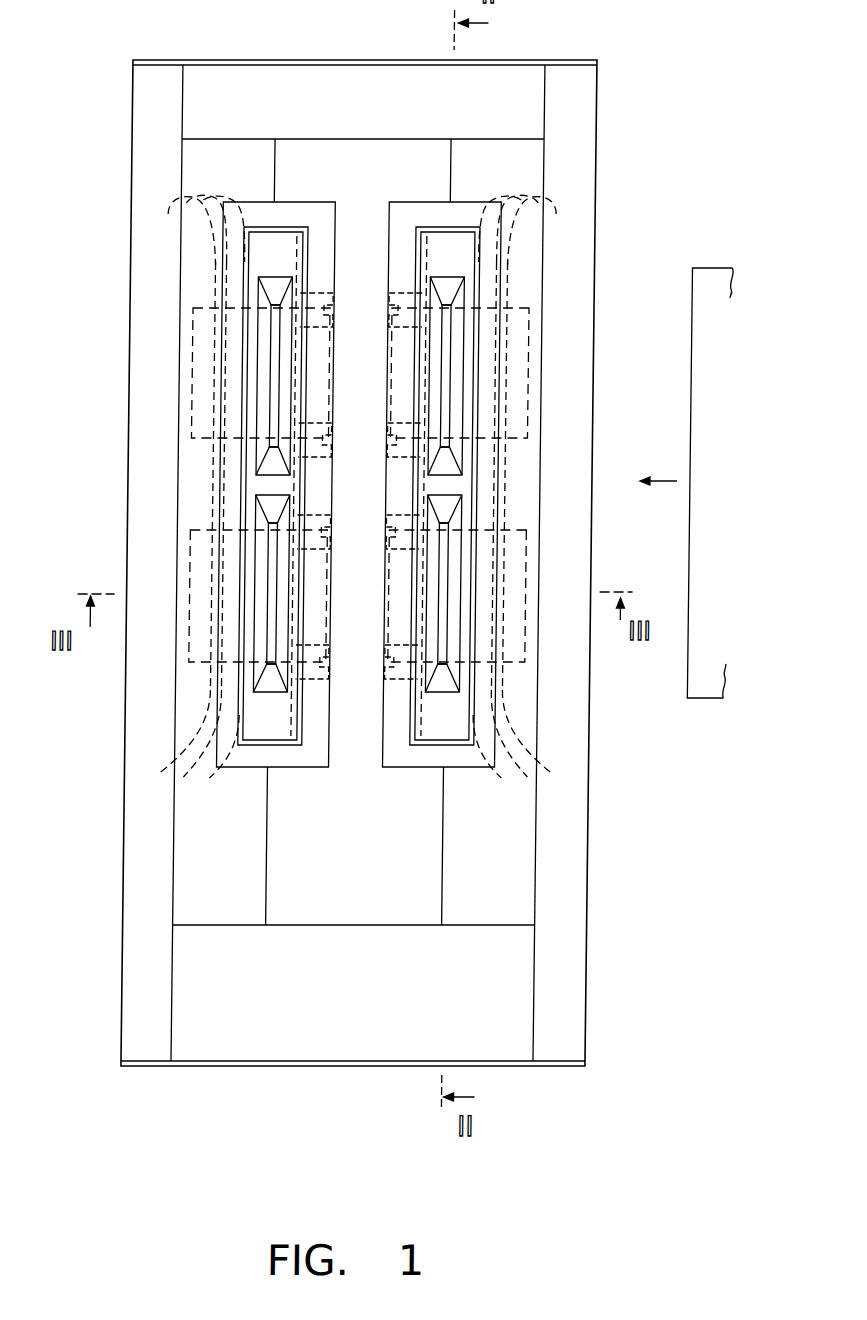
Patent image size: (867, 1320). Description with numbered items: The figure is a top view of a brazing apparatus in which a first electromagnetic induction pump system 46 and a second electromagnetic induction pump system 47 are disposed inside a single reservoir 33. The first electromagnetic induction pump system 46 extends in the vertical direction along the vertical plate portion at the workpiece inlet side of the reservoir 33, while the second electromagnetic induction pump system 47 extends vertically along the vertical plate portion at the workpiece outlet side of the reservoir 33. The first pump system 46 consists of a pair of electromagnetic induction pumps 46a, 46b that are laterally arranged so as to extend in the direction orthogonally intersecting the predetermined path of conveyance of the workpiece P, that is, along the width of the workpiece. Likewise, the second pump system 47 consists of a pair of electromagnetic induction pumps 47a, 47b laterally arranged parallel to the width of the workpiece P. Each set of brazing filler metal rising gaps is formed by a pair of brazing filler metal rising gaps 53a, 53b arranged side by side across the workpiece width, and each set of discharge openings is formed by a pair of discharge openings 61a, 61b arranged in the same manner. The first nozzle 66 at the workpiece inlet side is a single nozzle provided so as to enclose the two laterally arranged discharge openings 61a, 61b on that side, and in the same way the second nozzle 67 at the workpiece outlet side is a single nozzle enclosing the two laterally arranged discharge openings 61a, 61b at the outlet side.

The reservoir 33 is at (583, 100).
The first electromagnetic induction pump system 46 is at (560, 773).
The second electromagnetic induction pump system 47 is at (168, 772).
The electromagnetic induction pump 46a is at (534, 632).
The electromagnetic induction pump 46b is at (534, 358).
The electromagnetic induction pump 47a is at (196, 633).
The electromagnetic induction pump 47b is at (196, 358).
The brazing filler metal rising gap 53a is at (283, 547).
The brazing filler metal rising gap 53b is at (274, 410).
The discharge opening 61a is at (268, 578).
The discharge opening 61b is at (264, 380).
The first nozzle 66 is at (453, 227).
The second nozzle 67 is at (267, 227).
The workpiece P is at (712, 283).